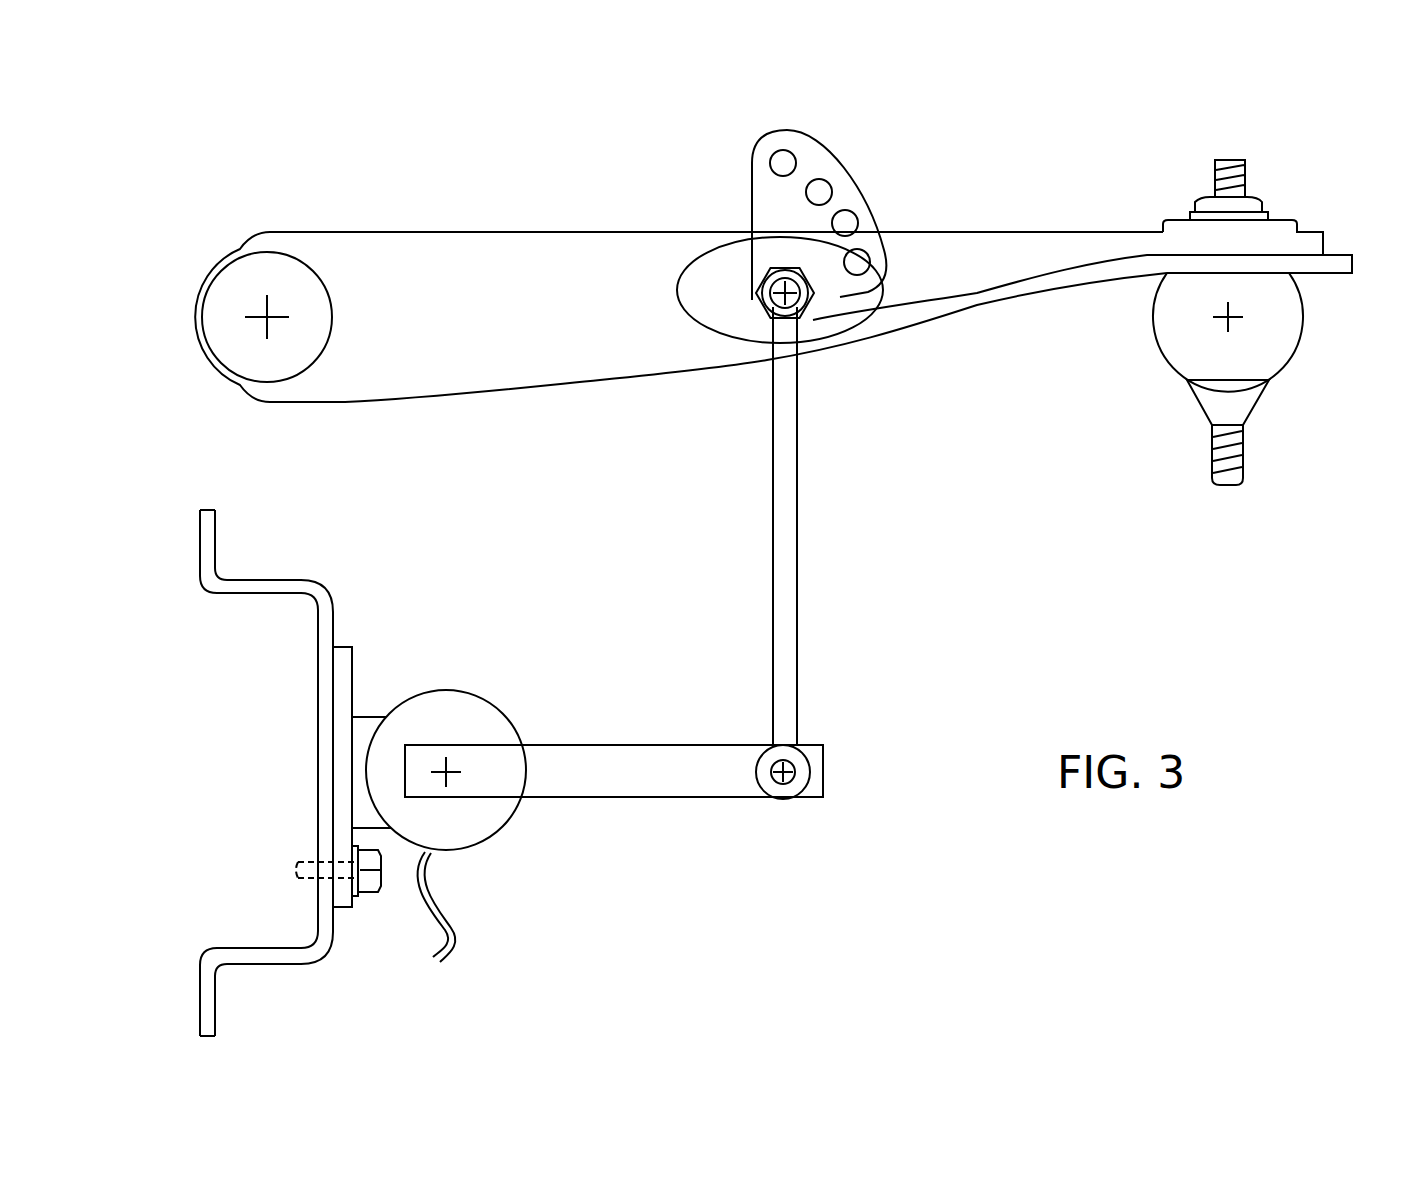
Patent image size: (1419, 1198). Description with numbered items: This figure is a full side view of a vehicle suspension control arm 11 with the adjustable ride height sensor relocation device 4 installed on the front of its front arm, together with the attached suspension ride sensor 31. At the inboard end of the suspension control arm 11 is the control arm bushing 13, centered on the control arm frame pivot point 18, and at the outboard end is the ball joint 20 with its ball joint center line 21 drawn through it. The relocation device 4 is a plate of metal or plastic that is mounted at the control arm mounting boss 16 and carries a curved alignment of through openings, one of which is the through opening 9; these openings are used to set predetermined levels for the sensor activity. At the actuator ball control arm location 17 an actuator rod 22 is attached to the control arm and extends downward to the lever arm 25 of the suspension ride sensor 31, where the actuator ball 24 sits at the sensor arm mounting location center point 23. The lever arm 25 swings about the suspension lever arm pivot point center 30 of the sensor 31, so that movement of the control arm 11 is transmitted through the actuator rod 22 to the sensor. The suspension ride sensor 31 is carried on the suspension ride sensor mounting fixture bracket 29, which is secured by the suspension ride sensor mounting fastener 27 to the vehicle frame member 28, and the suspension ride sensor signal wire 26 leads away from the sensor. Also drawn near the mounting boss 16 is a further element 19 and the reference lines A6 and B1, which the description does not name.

The adjustable ride height sensor relocation device 4 is at (883, 220).
The through opening 9 is at (770, 165).
The suspension control arm 11 is at (540, 272).
The control arm bushing 13 is at (245, 287).
The control arm mounting boss 16 is at (748, 290).
The actuator ball control arm location 17 is at (797, 305).
The control arm frame pivot point 18 is at (268, 315).
The bushing washer 19 is at (725, 268).
The ball joint 20 is at (1167, 330).
The ball joint center line 21 is at (1232, 322).
The actuator rod 22 is at (788, 548).
The sensor arm mounting location center point 23 is at (793, 765).
The actuator ball 24 is at (798, 787).
The lever arm 25 is at (638, 762).
The suspension ride sensor signal wire 26 is at (451, 927).
The suspension ride sensor mounting fastener 27 is at (359, 870).
The vehicle frame member 28 is at (272, 582).
The suspension ride sensor mounting fixture bracket 29 is at (357, 717).
The suspension lever arm pivot point center 30 is at (448, 772).
The suspension ride sensor 31 is at (473, 833).
The ball joint axis A6 is at (1218, 410).
The pivot axis B1 is at (787, 293).